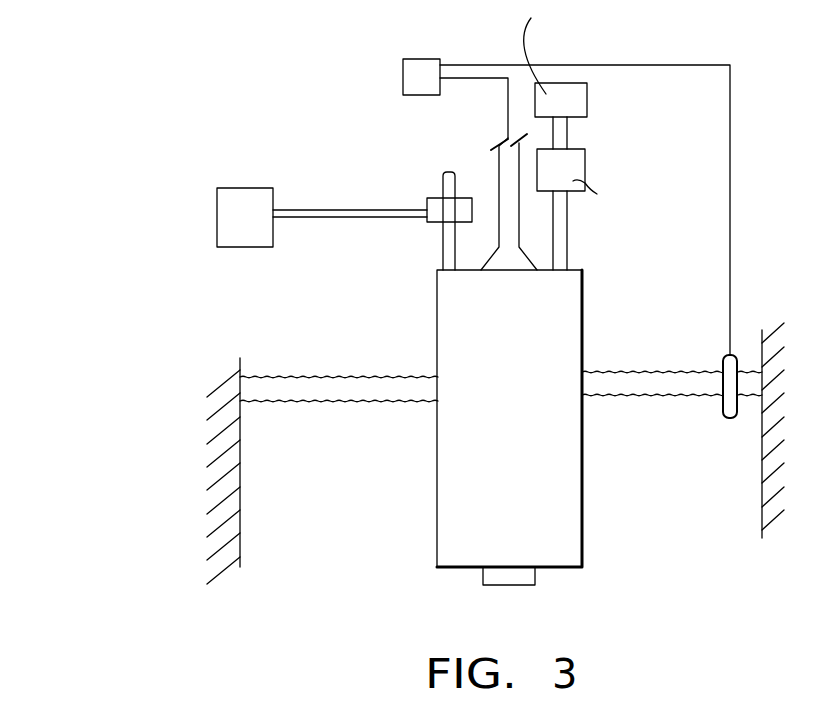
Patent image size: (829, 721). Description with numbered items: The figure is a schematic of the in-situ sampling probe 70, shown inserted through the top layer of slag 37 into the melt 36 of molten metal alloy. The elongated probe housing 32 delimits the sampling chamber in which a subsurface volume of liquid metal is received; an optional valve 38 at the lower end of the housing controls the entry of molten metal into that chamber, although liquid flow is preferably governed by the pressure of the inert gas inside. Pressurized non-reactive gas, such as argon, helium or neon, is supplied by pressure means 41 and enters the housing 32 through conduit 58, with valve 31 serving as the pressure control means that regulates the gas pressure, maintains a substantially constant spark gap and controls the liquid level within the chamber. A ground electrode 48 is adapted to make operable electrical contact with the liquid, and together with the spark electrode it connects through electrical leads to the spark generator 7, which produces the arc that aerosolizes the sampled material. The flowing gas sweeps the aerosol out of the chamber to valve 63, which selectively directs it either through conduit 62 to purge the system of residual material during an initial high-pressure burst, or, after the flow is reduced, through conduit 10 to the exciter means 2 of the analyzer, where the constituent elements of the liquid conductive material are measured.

The exciter means 2 is at (228, 193).
The spark generator 7 is at (412, 75).
The conduit 10 is at (365, 212).
The valve 31 is at (582, 173).
The probe housing 32 is at (583, 323).
The melt 36 is at (345, 461).
The slag 37 is at (358, 388).
The valve 38 is at (500, 587).
The pressure means 41 is at (563, 98).
The ground electrode 48 is at (723, 360).
The conduit 58 is at (563, 226).
The conduit 62 is at (445, 170).
The valve 63 is at (433, 227).
The sampling probe 70 is at (600, 487).